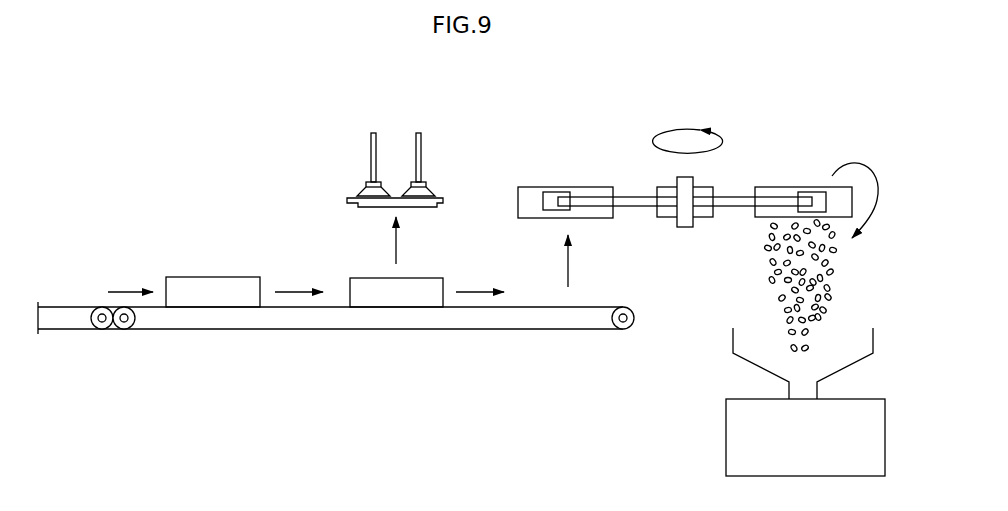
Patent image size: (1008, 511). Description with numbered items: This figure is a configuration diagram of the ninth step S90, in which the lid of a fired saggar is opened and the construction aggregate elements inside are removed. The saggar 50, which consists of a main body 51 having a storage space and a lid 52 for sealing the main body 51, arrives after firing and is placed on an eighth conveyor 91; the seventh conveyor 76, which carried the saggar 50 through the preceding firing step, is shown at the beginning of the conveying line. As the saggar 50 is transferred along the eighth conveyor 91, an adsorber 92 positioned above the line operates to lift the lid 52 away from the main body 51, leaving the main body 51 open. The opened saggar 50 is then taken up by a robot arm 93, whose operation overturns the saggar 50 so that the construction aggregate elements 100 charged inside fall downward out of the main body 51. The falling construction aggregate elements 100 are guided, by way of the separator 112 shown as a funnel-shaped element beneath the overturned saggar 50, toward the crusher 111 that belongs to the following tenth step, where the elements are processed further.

The saggar 50 is at (176, 257).
The ninth step S90 is at (230, 200).
The main body 51 is at (357, 286).
The lid 52 is at (350, 198).
The adsorber 92 is at (419, 158).
The robot arm 93 is at (668, 178).
The construction aggregate elements 100 is at (772, 262).
The separator 112 is at (733, 342).
The crusher 111 is at (729, 439).
The seventh conveyor 76 is at (70, 331).
The eighth conveyor 91 is at (181, 331).